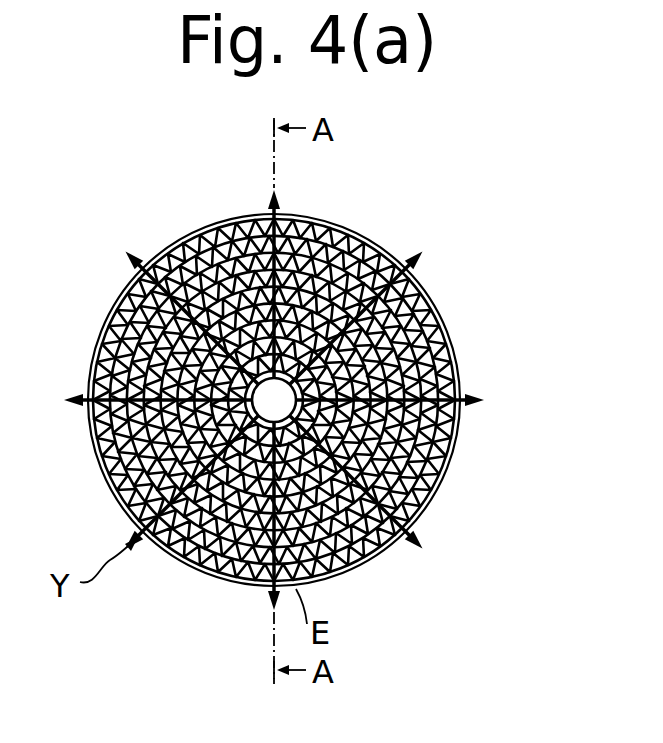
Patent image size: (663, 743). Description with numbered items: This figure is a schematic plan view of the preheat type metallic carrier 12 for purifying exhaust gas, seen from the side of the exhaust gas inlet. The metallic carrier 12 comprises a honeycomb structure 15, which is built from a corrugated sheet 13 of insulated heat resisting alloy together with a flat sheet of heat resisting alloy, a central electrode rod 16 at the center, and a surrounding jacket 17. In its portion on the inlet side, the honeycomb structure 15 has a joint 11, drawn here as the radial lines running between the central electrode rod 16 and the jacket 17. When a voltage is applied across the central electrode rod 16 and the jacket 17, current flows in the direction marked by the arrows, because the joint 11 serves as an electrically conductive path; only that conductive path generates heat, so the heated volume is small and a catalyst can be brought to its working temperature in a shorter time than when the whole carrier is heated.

The joint 11 is at (293, 211).
The metallic carrier 12 is at (419, 198).
The corrugated sheet 13 is at (428, 312).
The honeycomb structure 15 is at (183, 235).
The central electrode rod 16 is at (439, 482).
The jacket 17 is at (375, 560).